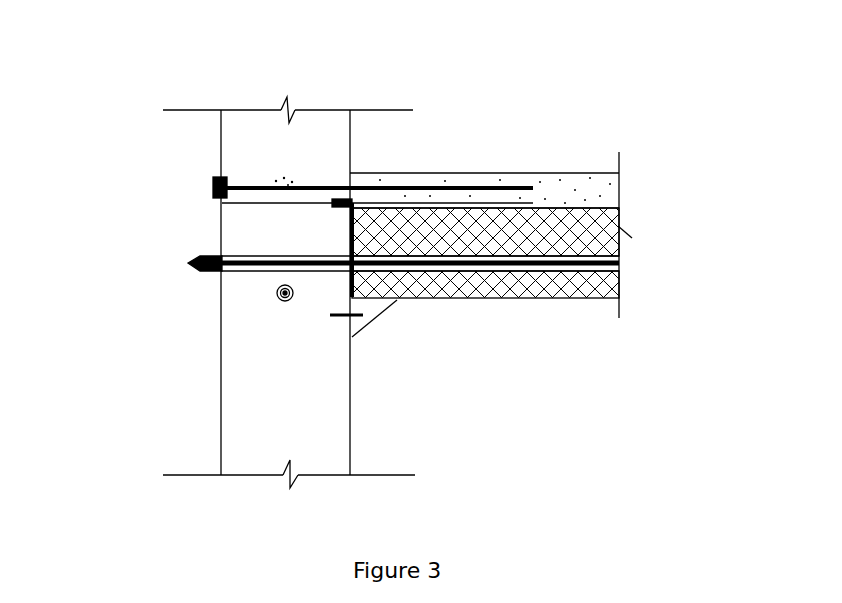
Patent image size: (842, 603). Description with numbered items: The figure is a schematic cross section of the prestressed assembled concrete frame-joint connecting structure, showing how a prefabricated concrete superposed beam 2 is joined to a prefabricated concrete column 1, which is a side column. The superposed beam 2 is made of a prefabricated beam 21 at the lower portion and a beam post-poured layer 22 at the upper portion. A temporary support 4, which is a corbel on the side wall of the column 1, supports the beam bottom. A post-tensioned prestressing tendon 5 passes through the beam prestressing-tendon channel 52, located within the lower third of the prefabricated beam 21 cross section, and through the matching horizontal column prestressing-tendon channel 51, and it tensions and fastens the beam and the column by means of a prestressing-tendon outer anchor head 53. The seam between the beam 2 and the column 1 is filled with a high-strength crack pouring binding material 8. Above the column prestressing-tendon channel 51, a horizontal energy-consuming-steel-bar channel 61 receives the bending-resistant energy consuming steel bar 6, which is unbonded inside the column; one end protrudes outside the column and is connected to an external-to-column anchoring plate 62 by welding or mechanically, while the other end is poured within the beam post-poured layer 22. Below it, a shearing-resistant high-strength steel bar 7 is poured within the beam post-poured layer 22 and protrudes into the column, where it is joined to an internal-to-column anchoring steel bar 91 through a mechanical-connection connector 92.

The prefabricated concrete column 1 is at (248, 430).
The prefabricated concrete superposed beam 2 is at (620, 200).
The prefabricated beam 21 is at (593, 297).
The beam post-poured layer 22 is at (610, 188).
The temporary support 4 is at (363, 315).
The post-tensioned prestressing tendon 5 is at (288, 303).
The column prestressing-tendon channel 51 is at (278, 298).
The beam prestressing-tendon channel 52 is at (480, 272).
The prestressing-tendon outer anchor head 53 is at (200, 265).
The bending-resistant energy consuming steel bar 6 is at (428, 188).
The energy-consuming-steel-bar channel 61 is at (272, 177).
The external-to-column anchoring plate 62 is at (217, 183).
The shearing-resistant high-strength steel bar 7 is at (535, 198).
The high-strength crack pouring binding material 8 is at (352, 198).
The internal-to-column anchoring steel bar 91 is at (222, 204).
The mechanical-connection connector 92 is at (335, 187).